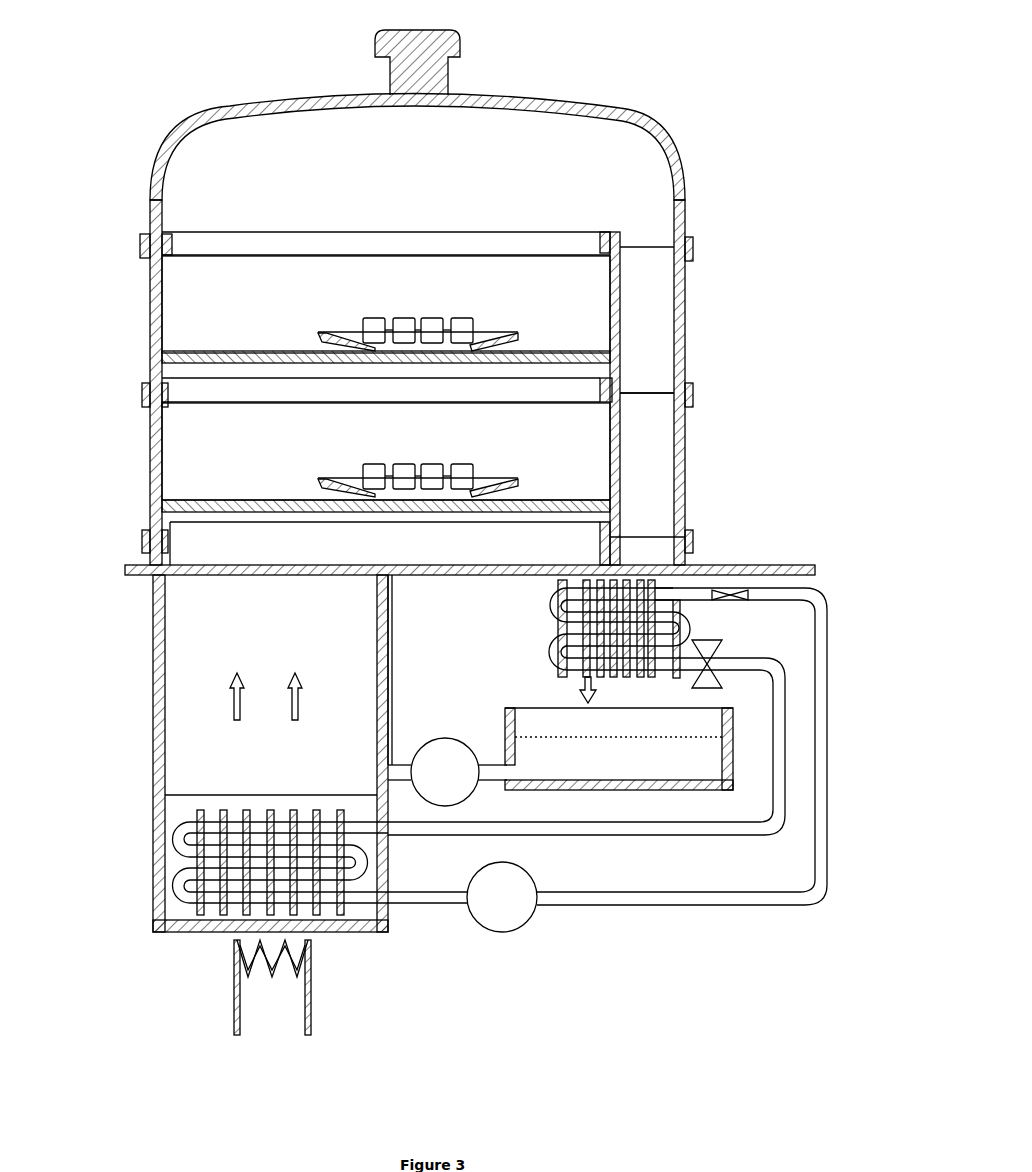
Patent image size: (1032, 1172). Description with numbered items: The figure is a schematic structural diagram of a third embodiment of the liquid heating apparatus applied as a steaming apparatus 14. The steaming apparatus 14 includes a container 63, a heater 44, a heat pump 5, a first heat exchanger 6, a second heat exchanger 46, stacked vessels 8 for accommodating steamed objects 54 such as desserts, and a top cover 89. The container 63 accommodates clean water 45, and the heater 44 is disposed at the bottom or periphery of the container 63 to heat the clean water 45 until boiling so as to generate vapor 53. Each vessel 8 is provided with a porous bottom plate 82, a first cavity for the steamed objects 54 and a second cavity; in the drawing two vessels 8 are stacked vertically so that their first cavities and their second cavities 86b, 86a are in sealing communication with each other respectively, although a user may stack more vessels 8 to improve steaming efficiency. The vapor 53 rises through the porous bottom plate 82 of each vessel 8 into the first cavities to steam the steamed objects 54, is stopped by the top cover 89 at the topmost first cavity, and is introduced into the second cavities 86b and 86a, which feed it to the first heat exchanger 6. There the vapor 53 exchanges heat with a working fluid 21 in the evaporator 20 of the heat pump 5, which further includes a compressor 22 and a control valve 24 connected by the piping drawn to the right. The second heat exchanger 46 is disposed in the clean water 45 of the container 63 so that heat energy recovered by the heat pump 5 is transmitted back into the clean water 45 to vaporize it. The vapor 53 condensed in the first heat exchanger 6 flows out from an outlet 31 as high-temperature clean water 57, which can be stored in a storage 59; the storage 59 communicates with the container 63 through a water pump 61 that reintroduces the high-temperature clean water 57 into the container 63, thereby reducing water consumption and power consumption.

The vessel 8 is at (130, 273).
The steaming apparatus 14 is at (722, 258).
The top cover 89 is at (542, 103).
The second cavity 86b is at (663, 333).
The second cavity 86a is at (660, 487).
The porous bottom plate 82 is at (271, 352).
The steamed objects 54 is at (455, 325).
The vapor 53 is at (227, 530).
The container 63 is at (160, 718).
The clean water 45 is at (177, 807).
The second heat exchanger 46 is at (355, 865).
The heater 44 is at (310, 1005).
The water pump 61 is at (449, 742).
The high-temperature clean water 57 is at (640, 770).
The storage 59 is at (727, 748).
The first heat exchanger 6 is at (577, 583).
The evaporator 20 is at (660, 632).
The outlet 31 is at (575, 690).
The heat pump 5 is at (826, 604).
The working fluid 21 is at (728, 592).
The control valve 24 is at (710, 660).
The compressor 22 is at (522, 910).